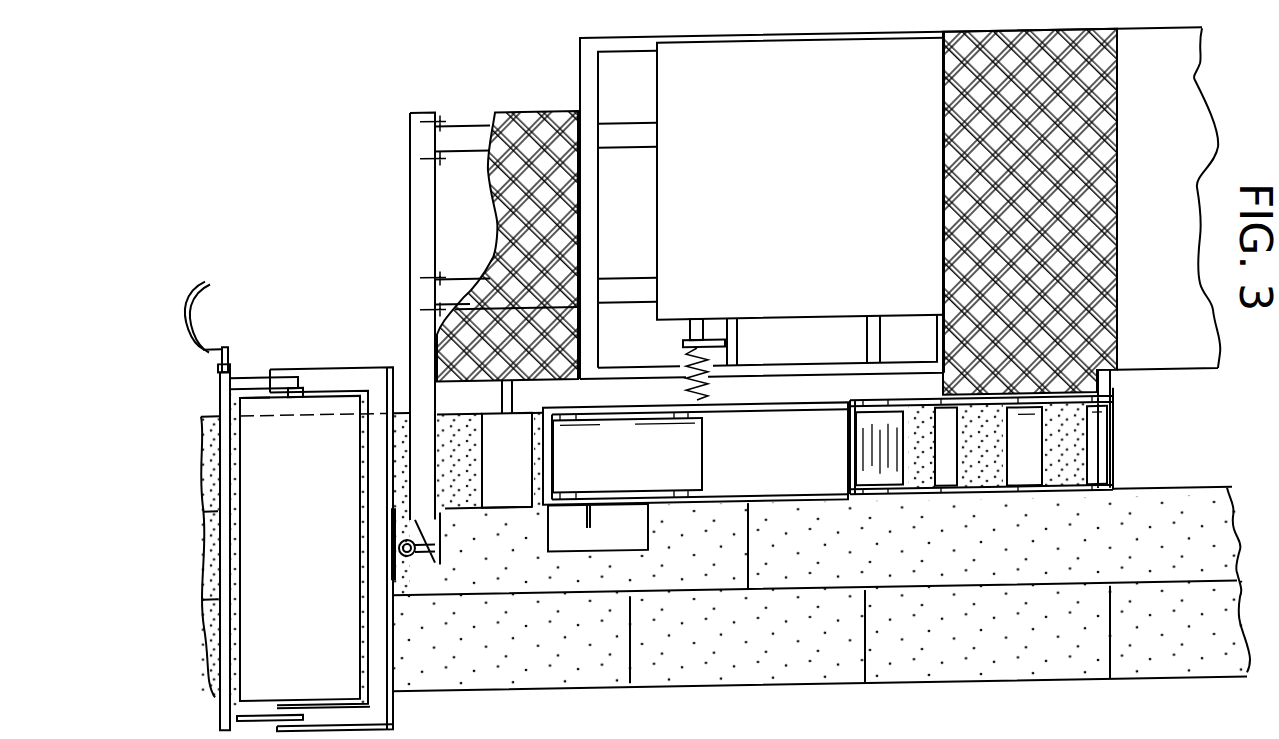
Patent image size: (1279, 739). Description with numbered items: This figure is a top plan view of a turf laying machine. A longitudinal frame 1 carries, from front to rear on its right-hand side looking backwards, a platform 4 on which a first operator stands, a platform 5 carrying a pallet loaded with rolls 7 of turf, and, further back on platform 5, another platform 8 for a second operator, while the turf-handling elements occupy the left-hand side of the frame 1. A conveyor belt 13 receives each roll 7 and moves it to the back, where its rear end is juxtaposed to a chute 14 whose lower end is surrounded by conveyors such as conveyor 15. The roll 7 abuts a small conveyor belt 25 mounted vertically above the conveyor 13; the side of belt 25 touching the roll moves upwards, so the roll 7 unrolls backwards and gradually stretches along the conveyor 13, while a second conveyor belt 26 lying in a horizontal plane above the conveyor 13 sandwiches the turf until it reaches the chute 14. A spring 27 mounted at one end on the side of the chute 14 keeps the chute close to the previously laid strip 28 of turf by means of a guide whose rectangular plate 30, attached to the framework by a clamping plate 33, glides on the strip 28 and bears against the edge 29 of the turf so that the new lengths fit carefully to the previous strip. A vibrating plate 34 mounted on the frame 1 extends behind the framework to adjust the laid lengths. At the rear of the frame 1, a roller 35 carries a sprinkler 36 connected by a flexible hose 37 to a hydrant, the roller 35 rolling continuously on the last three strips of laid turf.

The longitudinal frame 1 is at (623, 137).
The platform 4 is at (1107, 135).
The platform 5 is at (822, 181).
The roll of turf 7 is at (983, 486).
The platform 8 is at (525, 118).
The conveyor belt 13 is at (1028, 475).
The chute 14 is at (768, 468).
The conveyor 15 is at (625, 473).
The small conveyor belt 25 is at (950, 478).
The second conveyor belt 26 is at (883, 476).
The spring 27 is at (712, 389).
The previously laid strip of turf 28 is at (215, 517).
The edge of the turf 29 is at (1170, 488).
The rectangular plate 30 is at (636, 531).
The clamping plate 33 is at (590, 523).
The vibrating plate 34 is at (505, 495).
The roller 35 is at (307, 521).
The sprinkler 36 is at (228, 576).
The flexible hose 37 is at (220, 298).